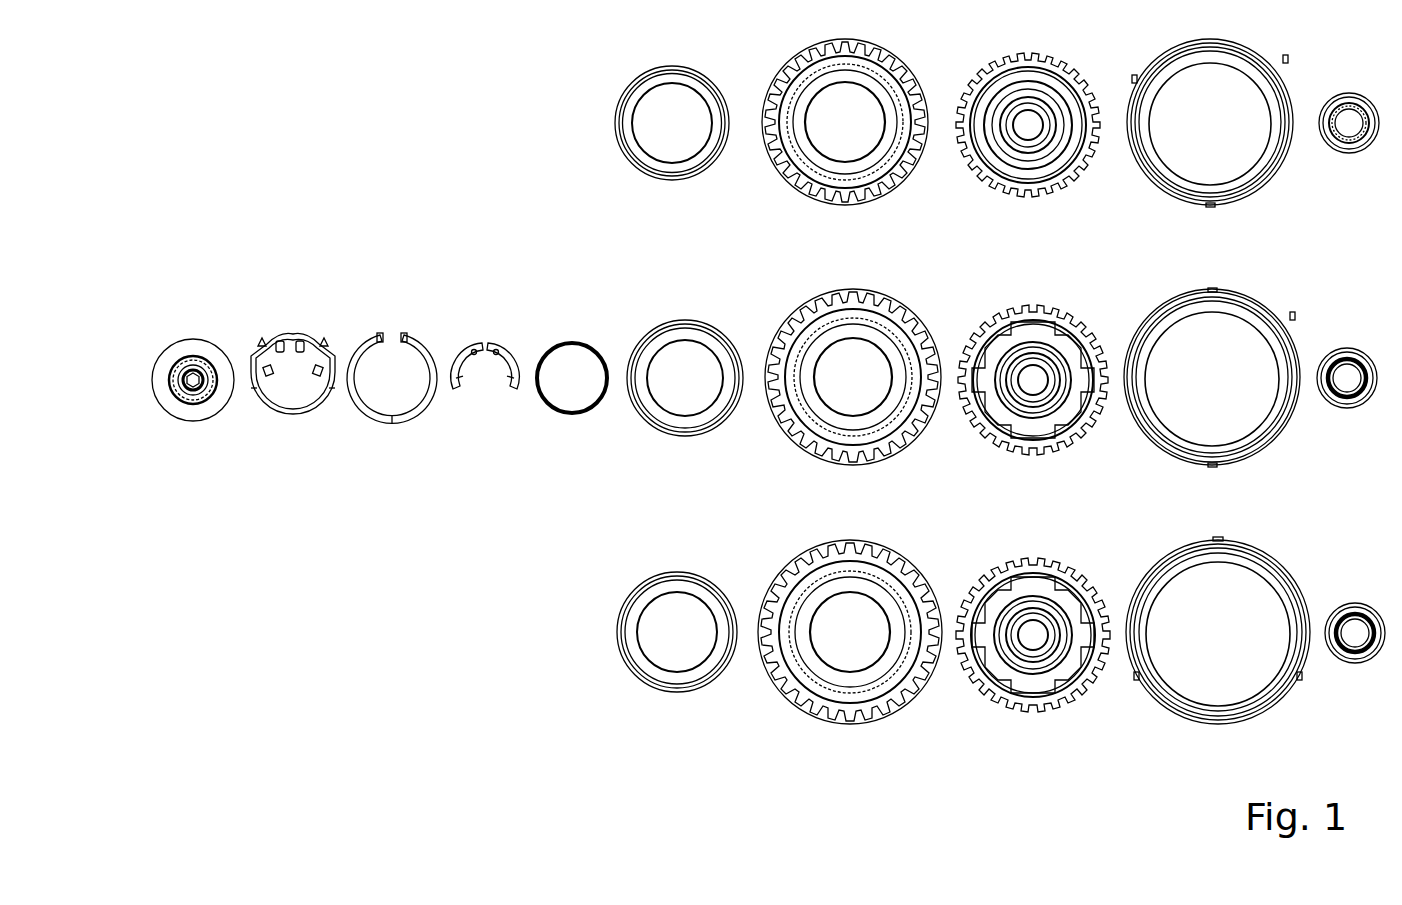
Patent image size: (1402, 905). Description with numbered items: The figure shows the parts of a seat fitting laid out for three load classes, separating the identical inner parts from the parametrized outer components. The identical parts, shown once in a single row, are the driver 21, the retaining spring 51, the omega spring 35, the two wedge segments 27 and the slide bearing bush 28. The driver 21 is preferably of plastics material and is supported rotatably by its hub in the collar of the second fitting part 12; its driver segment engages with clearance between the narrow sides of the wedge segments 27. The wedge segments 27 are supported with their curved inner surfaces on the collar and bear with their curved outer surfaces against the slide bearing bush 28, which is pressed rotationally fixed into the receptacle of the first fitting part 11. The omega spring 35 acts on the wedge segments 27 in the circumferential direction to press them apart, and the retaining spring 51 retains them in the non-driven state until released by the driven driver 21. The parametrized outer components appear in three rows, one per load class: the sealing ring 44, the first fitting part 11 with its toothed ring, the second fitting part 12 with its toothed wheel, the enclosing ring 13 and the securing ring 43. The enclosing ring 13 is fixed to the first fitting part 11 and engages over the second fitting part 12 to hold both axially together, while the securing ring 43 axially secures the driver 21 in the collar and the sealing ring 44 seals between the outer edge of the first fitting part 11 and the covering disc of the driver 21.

The driver 21 is at (208, 428).
The retaining spring 51 is at (312, 415).
The omega spring 35 is at (415, 420).
The wedge segments 27 is at (460, 390).
The slide bearing bush 28 is at (583, 415).
The sealing ring 44 is at (679, 420).
The first fitting part 11 is at (850, 407).
The second fitting part 12 is at (1033, 414).
The enclosing ring 13 is at (1217, 407).
The securing ring 43 is at (1351, 434).